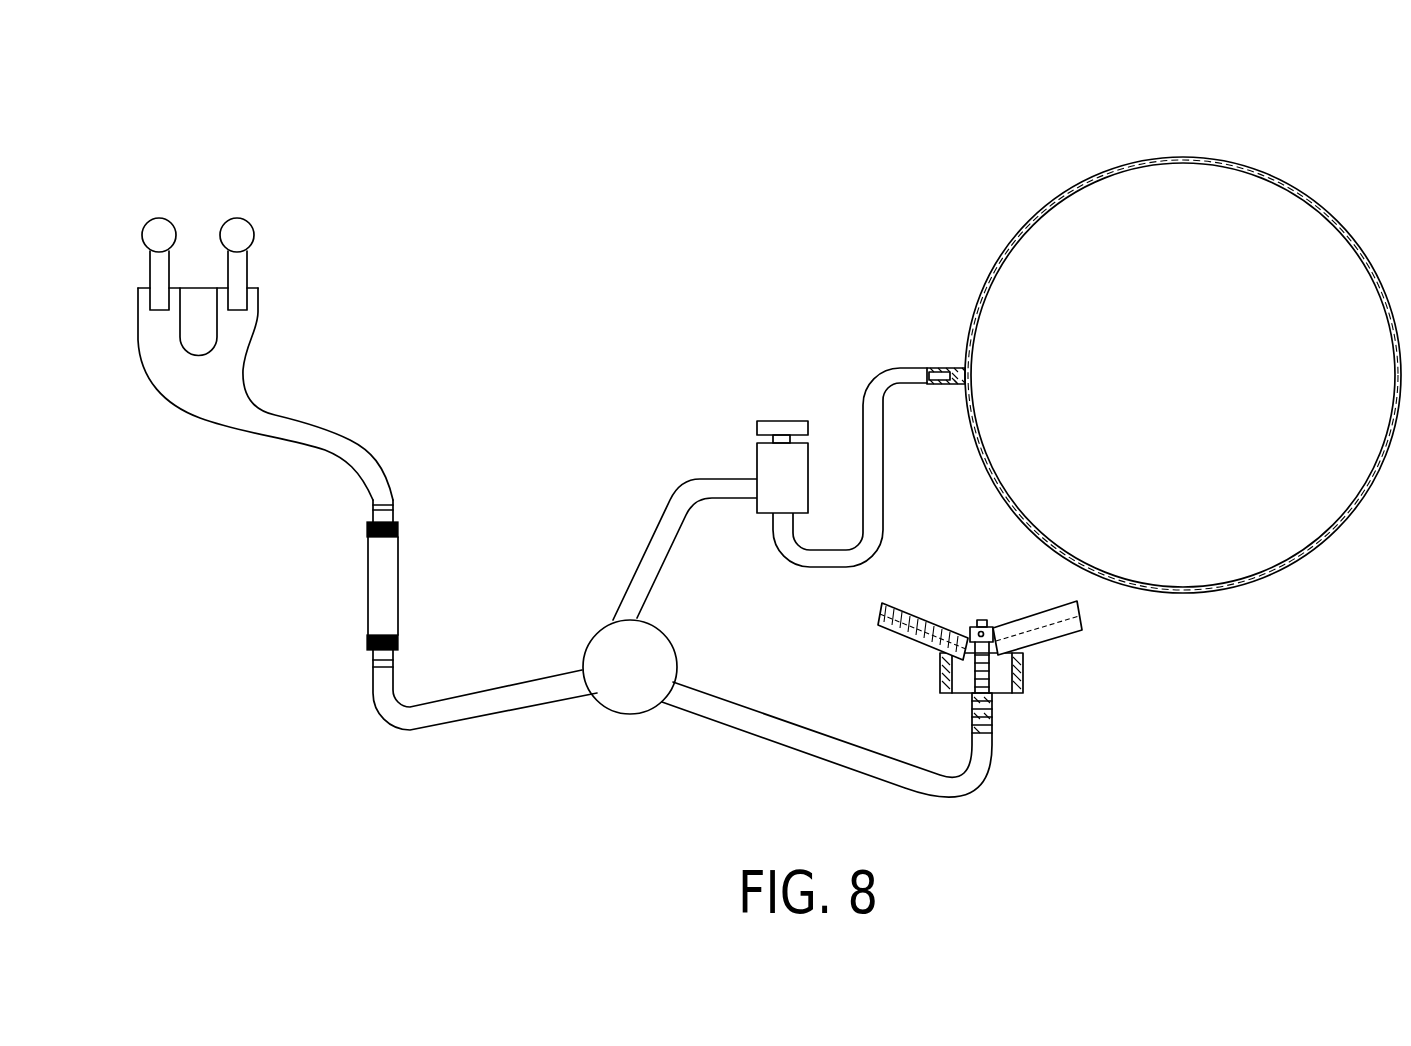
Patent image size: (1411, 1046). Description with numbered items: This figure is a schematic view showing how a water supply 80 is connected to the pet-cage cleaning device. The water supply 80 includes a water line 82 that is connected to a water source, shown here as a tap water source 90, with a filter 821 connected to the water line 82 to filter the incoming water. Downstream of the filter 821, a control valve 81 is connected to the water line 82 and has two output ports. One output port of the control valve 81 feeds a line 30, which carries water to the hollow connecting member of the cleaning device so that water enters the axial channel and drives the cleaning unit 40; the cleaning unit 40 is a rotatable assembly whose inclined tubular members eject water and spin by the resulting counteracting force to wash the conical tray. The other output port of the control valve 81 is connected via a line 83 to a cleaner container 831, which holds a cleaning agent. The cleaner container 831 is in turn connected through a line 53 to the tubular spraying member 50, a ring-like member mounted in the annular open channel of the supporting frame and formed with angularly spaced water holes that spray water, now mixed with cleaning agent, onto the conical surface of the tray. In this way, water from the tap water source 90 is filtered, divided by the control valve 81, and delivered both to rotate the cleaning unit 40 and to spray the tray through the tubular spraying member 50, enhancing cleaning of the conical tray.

The line 30 is at (714, 742).
The cleaning unit 40 is at (1054, 645).
The tubular spraying member 50 is at (1063, 178).
The line 53 is at (903, 366).
The water supply 80 is at (647, 517).
The control valve 81 is at (615, 695).
The water line 82 is at (452, 717).
The filter 821 is at (388, 563).
The line 83 is at (698, 487).
The cleaner container 831 is at (808, 458).
The tap water source 90 is at (257, 210).